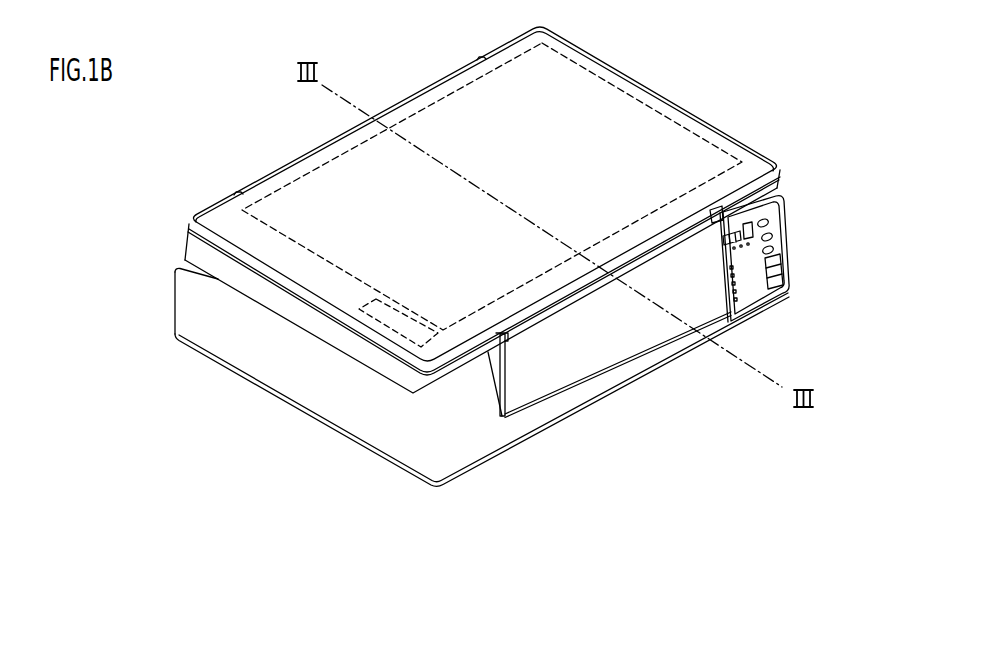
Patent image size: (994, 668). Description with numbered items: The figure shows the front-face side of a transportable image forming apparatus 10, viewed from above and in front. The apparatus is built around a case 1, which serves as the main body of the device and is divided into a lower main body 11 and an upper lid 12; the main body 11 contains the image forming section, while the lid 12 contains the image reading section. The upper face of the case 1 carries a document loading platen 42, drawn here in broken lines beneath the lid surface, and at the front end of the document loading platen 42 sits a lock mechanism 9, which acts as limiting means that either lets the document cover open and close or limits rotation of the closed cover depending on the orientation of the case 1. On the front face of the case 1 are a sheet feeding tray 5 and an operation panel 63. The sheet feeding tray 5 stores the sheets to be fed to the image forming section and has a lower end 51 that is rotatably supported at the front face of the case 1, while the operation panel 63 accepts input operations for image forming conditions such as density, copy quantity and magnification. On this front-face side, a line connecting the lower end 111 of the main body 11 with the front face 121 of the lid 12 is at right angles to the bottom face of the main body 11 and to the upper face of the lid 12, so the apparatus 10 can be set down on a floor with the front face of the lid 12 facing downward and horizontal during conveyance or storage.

The transportable image forming apparatus 10 is at (757, 82).
The case 1 is at (105, 205).
The lid 12 is at (185, 257).
The main body 11 is at (180, 322).
The front face of the lid 121 is at (773, 190).
The lower end of the main body 111 is at (475, 473).
The document loading platen 42 is at (618, 86).
The lock mechanism 9 is at (393, 334).
The sheet feeding tray 5 is at (625, 332).
The lower end of the sheet feeding tray 51 is at (573, 383).
The operation panel 63 is at (757, 280).